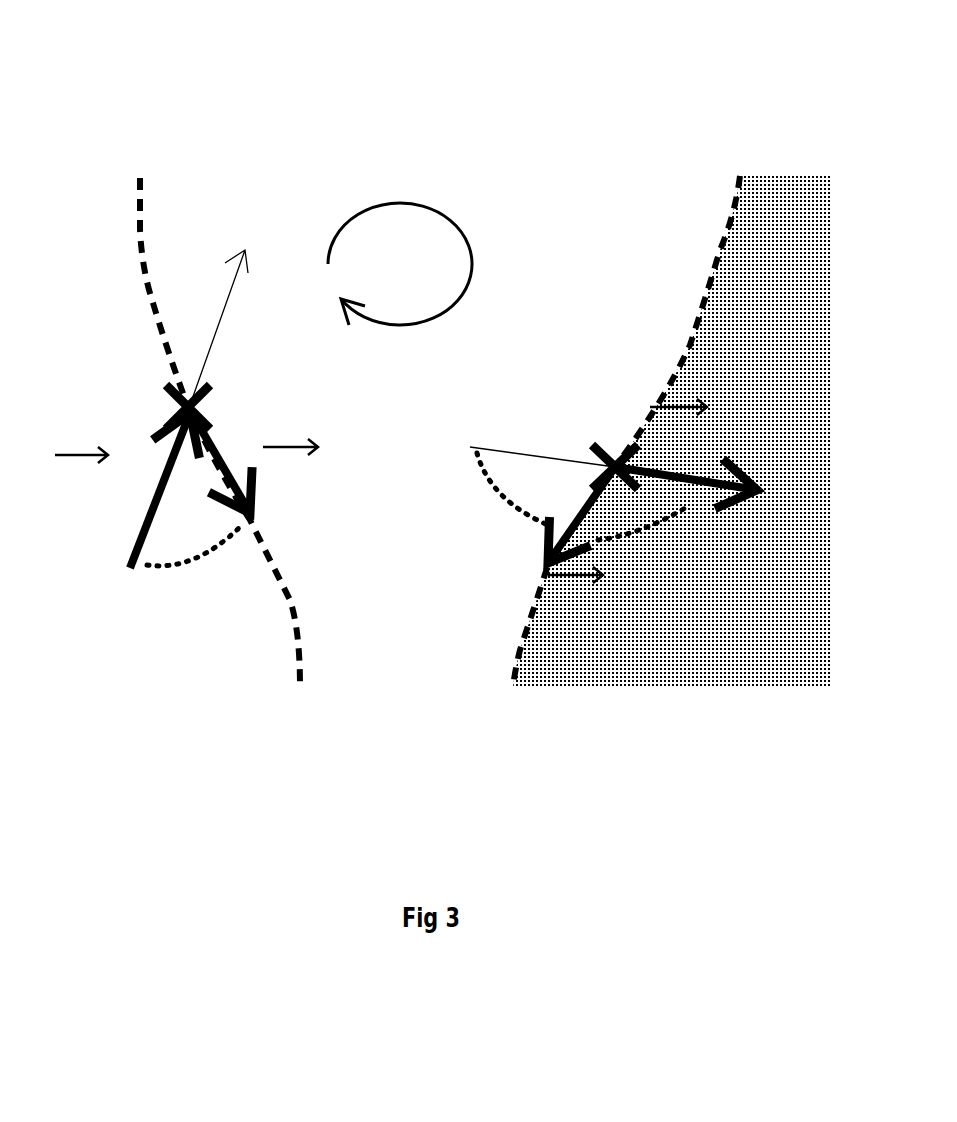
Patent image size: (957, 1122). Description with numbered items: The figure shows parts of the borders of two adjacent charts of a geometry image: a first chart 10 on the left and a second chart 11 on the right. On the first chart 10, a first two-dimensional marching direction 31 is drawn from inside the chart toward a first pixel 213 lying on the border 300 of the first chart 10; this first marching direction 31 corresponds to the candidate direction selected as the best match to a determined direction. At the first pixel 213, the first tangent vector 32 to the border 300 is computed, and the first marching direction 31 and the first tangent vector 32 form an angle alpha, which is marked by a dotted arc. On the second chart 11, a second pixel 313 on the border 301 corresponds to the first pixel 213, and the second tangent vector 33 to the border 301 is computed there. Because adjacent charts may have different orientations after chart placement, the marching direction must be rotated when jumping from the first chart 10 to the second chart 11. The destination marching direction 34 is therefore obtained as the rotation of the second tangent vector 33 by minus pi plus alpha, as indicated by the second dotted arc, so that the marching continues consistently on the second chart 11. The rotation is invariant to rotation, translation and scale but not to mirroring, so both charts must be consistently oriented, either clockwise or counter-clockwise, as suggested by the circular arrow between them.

The first chart 10 is at (108, 225).
The second chart 11 is at (770, 210).
The border 300 is at (143, 225).
The border 301 is at (720, 248).
The first pixel 213 is at (185, 407).
The second pixel 313 is at (613, 465).
The direction d1 31 is at (130, 568).
The tangent vector t1 32 is at (215, 447).
The tangent vector t2 33 is at (573, 500).
The marching direction d2 34 is at (737, 462).